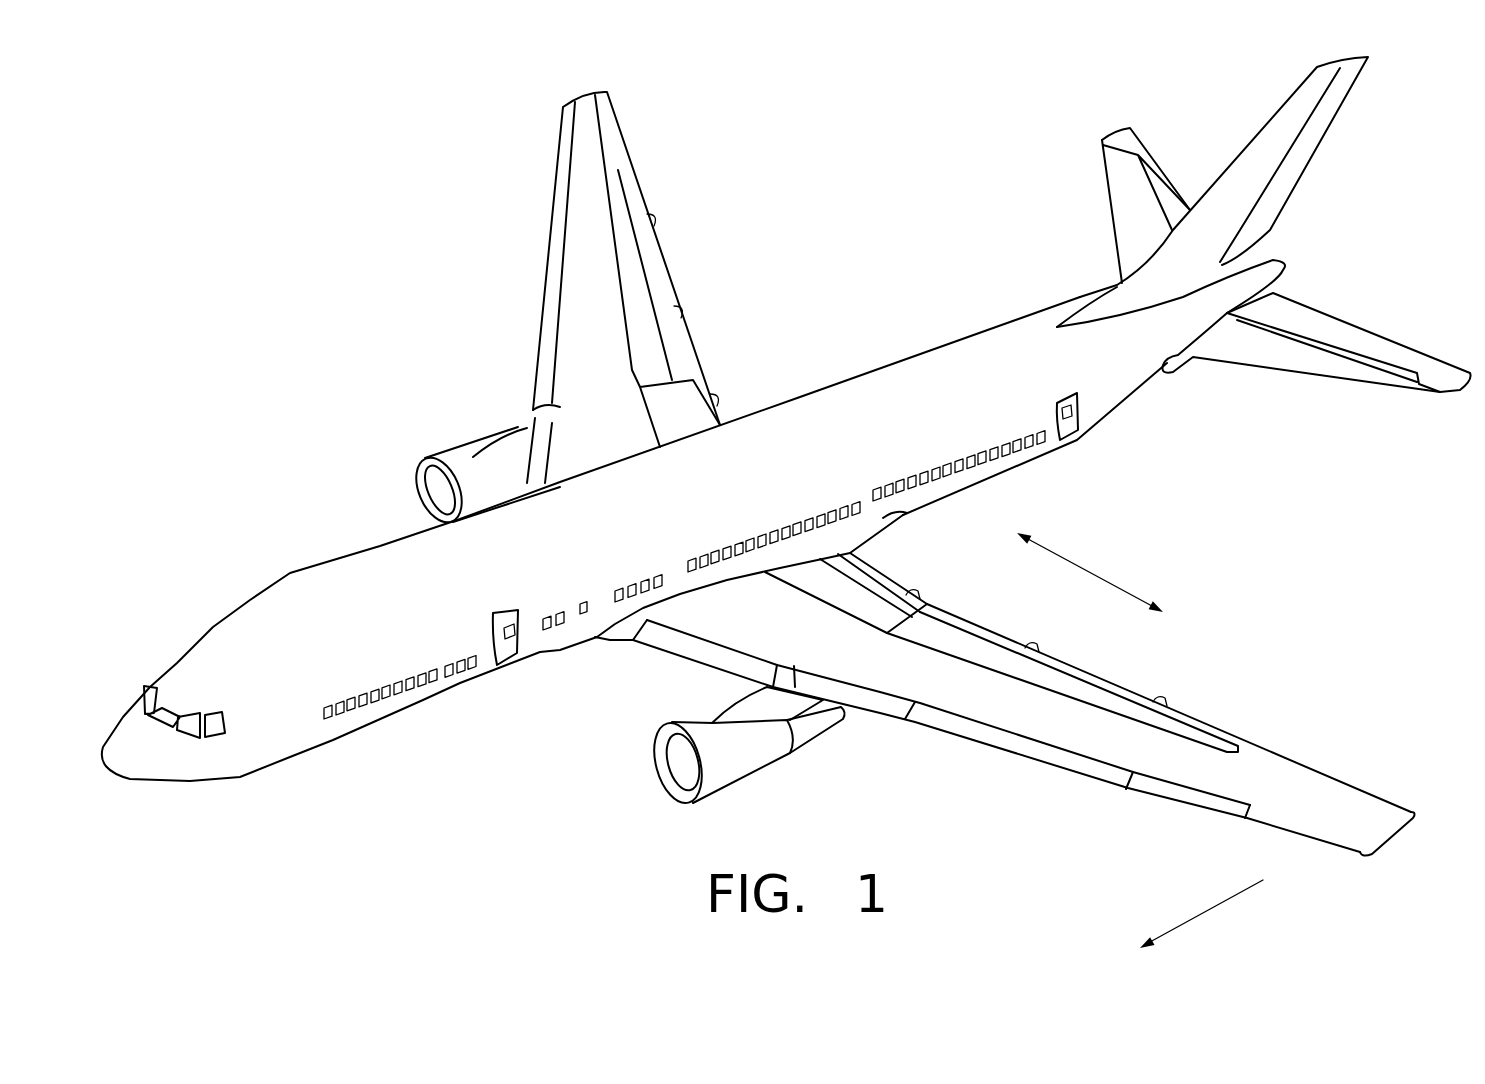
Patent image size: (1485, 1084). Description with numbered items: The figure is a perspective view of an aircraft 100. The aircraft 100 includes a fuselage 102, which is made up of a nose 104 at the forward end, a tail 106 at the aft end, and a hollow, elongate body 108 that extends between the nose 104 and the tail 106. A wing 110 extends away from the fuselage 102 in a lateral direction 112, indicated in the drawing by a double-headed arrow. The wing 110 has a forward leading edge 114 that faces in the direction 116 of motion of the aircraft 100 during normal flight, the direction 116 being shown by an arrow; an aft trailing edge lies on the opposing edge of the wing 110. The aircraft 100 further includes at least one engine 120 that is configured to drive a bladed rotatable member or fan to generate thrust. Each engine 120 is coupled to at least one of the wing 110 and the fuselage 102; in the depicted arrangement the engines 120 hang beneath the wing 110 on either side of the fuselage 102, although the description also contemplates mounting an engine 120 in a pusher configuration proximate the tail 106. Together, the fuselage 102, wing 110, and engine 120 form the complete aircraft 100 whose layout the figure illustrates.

The aircraft 100 is at (384, 300).
The fuselage 102 is at (807, 437).
The nose 104 is at (220, 657).
The tail 106 is at (1155, 397).
The hollow, elongate body 108 is at (558, 576).
The wing 110 is at (1017, 721).
The lateral direction 112 is at (1072, 562).
The forward leading edge 114 is at (1247, 818).
The direction of motion 116 is at (1213, 910).
The engine 120 is at (452, 453).